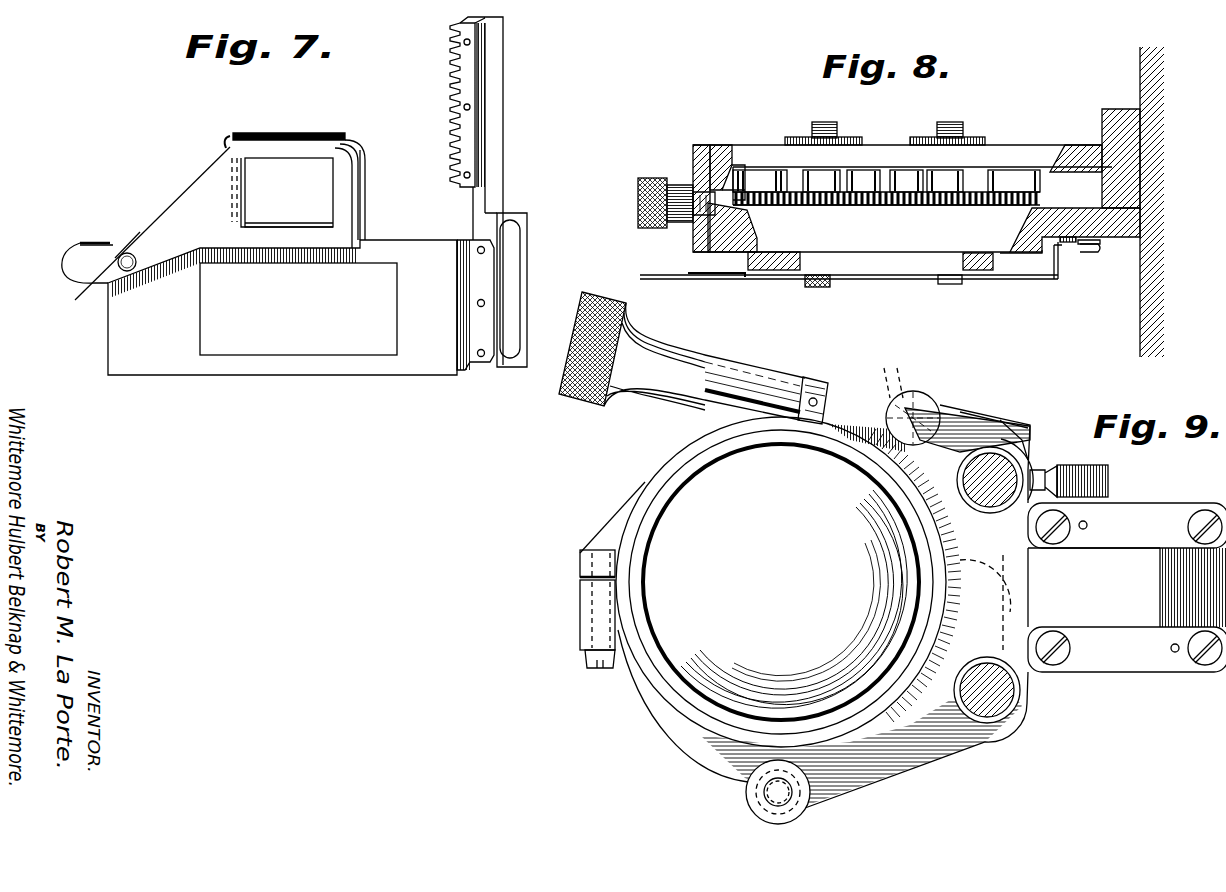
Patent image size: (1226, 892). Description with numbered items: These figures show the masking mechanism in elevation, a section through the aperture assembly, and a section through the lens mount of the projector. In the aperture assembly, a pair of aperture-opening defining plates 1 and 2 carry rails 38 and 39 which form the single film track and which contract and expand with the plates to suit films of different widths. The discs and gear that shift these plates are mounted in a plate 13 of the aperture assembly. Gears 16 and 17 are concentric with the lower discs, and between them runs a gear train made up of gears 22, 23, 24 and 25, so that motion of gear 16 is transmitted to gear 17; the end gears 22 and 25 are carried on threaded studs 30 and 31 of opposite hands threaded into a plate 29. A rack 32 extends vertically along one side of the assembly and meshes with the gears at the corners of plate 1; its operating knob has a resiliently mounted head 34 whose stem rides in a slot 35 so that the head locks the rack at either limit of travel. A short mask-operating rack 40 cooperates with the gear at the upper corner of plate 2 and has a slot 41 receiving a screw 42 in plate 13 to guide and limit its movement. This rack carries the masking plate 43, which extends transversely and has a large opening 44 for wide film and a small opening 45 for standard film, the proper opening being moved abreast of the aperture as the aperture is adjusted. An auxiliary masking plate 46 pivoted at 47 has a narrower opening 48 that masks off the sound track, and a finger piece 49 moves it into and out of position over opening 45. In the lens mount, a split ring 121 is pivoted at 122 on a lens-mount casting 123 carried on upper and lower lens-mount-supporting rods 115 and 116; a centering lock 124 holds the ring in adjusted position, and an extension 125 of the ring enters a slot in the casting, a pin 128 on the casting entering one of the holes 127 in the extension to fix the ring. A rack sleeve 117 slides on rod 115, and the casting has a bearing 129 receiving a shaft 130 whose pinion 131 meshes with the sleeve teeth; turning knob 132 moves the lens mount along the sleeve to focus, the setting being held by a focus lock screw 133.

In FIG. 8, the aperture-opening defining plate 1 is at (775, 272).
In FIG. 8, the aperture-opening defining plate 2 is at (995, 272).
In FIG. 8, the plate 13 is at (1095, 222).
In FIG. 8, the gear 16 is at (755, 170).
In FIG. 8, the gear 17 is at (1010, 208).
In FIG. 8, the gear 22 is at (820, 208).
In FIG. 8, the gear 23 is at (860, 208).
In FIG. 8, the gear 24 is at (905, 208).
In FIG. 8, the gear 25 is at (942, 208).
In FIG. 8, the plate 29 is at (1078, 146).
In FIG. 8, the threaded stud 30 is at (826, 122).
In FIG. 8, the threaded stud 31 is at (950, 122).
In FIG. 8, the rack 32 is at (703, 145).
In FIG. 8, the head 34 is at (652, 178).
In FIG. 8, the slot 35 is at (693, 240).
In FIG. 8, the rail 38 is at (818, 287).
In FIG. 8, the rail 39 is at (948, 284).
In FIG. 7, the mask-operating rack 40 is at (452, 72).
In FIG. 8, the mask-operating rack 40 is at (1105, 246).
In FIG. 7, the slot 41 is at (527, 230).
In FIG. 8, the screw 42 is at (1088, 252).
In FIG. 7, the masking plate 43 is at (395, 240).
In FIG. 7, the large opening 44 is at (298, 358).
In FIG. 7, the small opening 45 is at (225, 160).
In FIG. 8, the small opening 45 is at (832, 279).
In FIG. 7, the auxiliary masking plate 46 is at (140, 232).
In FIG. 8, the auxiliary masking plate 46 is at (733, 279).
In FIG. 7, the pivot 47 is at (118, 270).
In FIG. 8, the pivot 47 is at (700, 277).
In FIG. 7, the opening 48 is at (304, 160).
In FIG. 8, the opening 48 is at (840, 280).
In FIG. 7, the finger piece 49 is at (82, 245).
In FIG. 9, the lens-mount-supporting rod 115 is at (1035, 462).
In FIG. 9, the lens-mount-supporting rod 116 is at (990, 690).
In FIG. 9, the rack sleeve 117 is at (1020, 448).
In FIG. 9, the split ring 121 is at (660, 487).
In FIG. 9, the pivot 122 is at (765, 793).
In FIG. 9, the lens-mount casting 123 is at (945, 752).
In FIG. 9, the centering lock 124 is at (755, 775).
In FIG. 9, the extension 125 is at (845, 415).
In FIG. 9, the holes 127 is at (891, 373).
In FIG. 9, the pin 128 is at (905, 445).
In FIG. 9, the bearing 129 is at (975, 410).
In FIG. 9, the shaft 130 is at (960, 410).
In FIG. 9, the pinion 131 is at (1005, 425).
In FIG. 9, the knob 132 is at (580, 395).
In FIG. 9, the focus lock screw 133 is at (1110, 480).